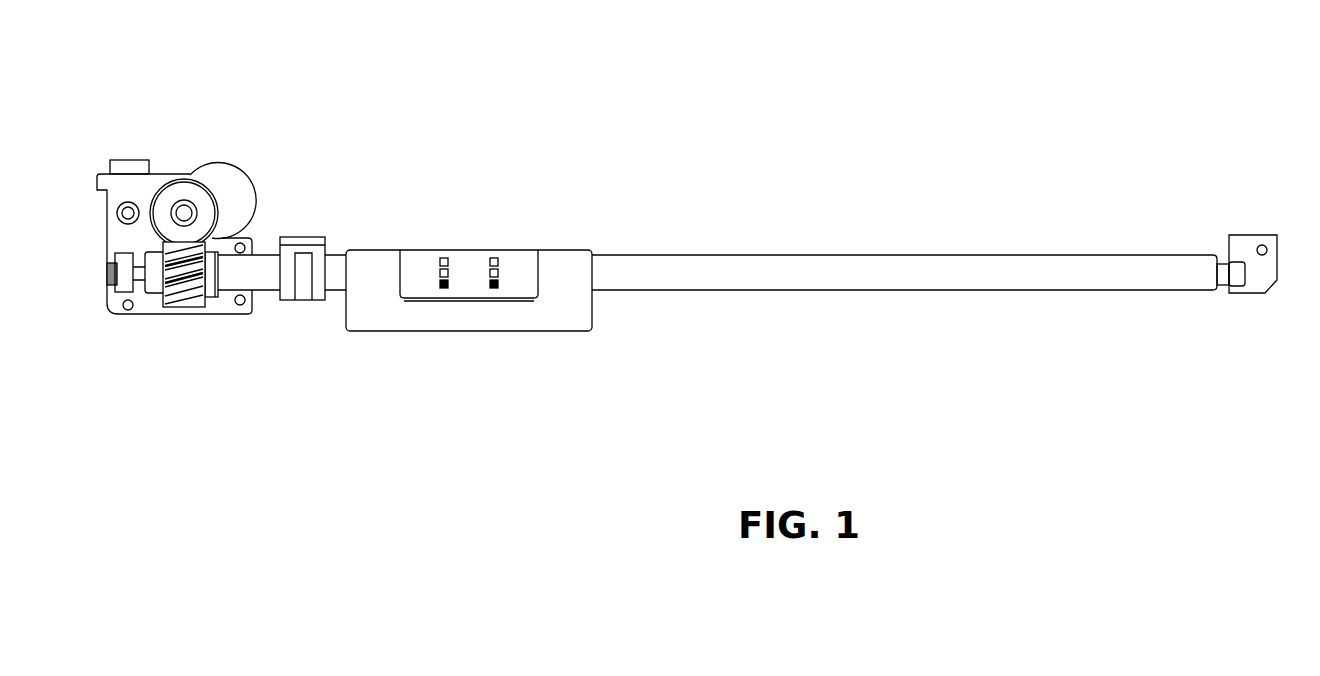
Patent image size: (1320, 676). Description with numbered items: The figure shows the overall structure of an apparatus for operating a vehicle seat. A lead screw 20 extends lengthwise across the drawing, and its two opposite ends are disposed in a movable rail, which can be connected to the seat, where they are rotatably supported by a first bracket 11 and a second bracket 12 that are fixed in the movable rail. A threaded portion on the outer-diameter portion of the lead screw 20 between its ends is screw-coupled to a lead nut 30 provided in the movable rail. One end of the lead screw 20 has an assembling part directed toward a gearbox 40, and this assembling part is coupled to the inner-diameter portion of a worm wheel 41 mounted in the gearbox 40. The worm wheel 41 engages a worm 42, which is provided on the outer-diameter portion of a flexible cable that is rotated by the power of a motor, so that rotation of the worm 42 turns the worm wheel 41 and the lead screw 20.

The first bracket 11 is at (300, 242).
The second bracket 12 is at (1247, 240).
The lead screw 20 is at (718, 250).
The lead nut 30 is at (567, 255).
The gearbox 40 is at (222, 172).
The worm wheel 41 is at (186, 303).
The worm 42 is at (182, 190).